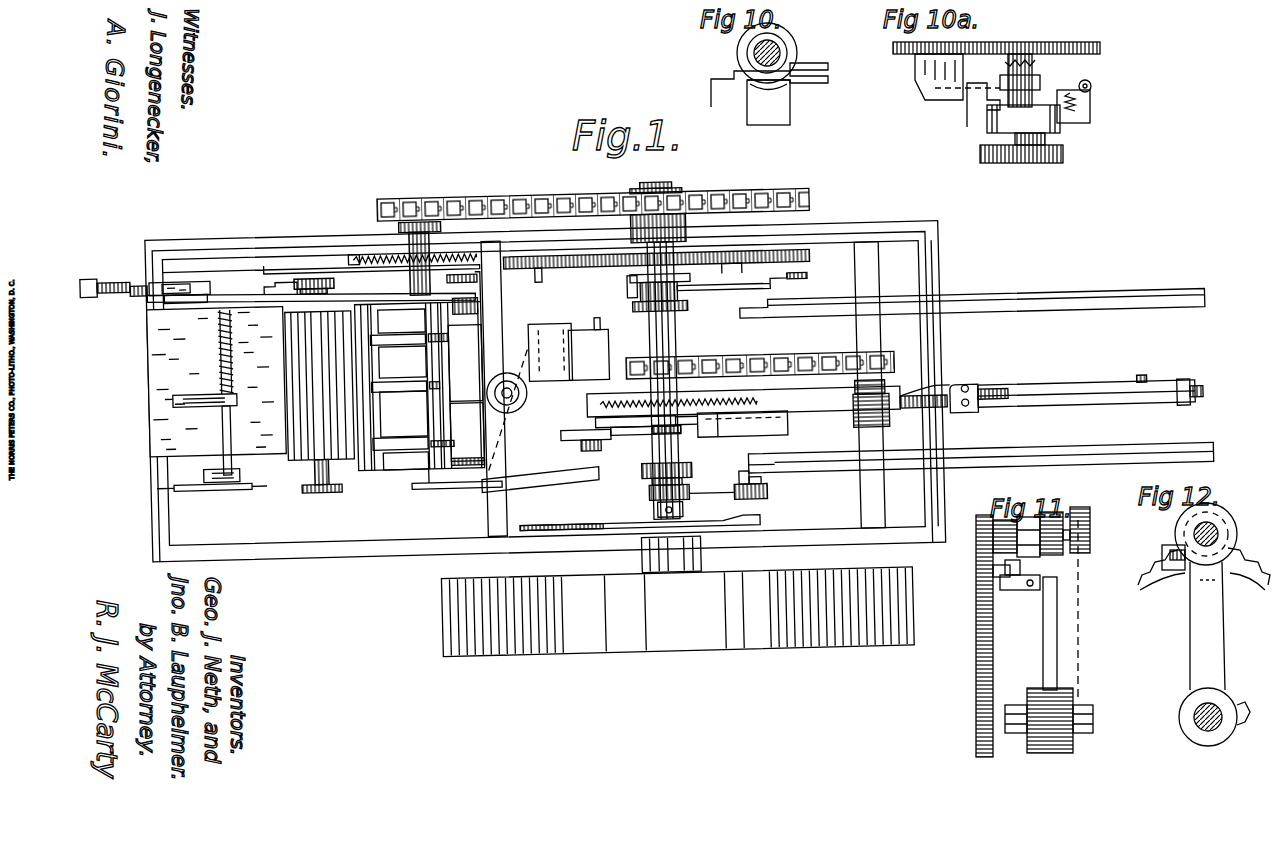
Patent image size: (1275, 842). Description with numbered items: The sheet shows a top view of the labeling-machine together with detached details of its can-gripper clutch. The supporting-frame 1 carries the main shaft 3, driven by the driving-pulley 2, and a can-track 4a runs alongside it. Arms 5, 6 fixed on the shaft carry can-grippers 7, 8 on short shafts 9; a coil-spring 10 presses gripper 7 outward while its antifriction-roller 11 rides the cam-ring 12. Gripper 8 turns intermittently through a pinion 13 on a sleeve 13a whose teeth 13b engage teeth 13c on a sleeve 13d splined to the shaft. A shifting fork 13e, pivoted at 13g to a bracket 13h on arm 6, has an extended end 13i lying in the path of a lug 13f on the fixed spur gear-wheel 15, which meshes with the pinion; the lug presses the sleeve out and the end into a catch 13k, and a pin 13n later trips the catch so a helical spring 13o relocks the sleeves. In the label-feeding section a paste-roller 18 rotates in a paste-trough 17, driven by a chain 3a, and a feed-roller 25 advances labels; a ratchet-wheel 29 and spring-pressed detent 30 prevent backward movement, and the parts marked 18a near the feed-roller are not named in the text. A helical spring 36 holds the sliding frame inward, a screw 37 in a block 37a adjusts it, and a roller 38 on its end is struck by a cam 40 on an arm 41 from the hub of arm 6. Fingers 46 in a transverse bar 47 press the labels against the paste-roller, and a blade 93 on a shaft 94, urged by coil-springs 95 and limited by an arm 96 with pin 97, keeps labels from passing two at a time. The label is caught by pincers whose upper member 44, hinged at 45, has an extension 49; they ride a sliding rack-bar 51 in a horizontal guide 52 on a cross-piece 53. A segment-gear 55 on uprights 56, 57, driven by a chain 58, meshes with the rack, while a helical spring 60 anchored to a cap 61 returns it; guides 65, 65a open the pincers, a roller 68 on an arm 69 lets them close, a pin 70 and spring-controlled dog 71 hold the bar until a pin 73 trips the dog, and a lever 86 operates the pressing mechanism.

In FIG. 1, the supporting-frame 1 is at (858, 236).
In FIG. 1, the driving-pulley 2 is at (677, 612).
In FIG. 1, the main shaft 3 is at (677, 330).
In FIG. 11, the main shaft 3 is at (1027, 705).
In FIG. 12, the main shaft 3 is at (1190, 716).
In FIG. 1, the chain 3a is at (576, 195).
In FIG. 1, the can-track 4a is at (993, 325).
In FIG. 1, the arm 5 is at (647, 495).
In FIG. 1, the arm 6 is at (690, 304).
In FIG. 10, the arm 6 is at (768, 102).
In FIG. 10A, the arm 6 is at (1023, 125).
In FIG. 11, the arm 6 is at (1043, 631).
In FIG. 12, the arm 6 is at (1207, 626).
In FIG. 1, the can-gripper 7 is at (690, 472).
In FIG. 1, the can-gripper 8 is at (635, 314).
In FIG. 10A, the can-gripper 8 is at (1021, 154).
In FIG. 11, the can-gripper 8 is at (1090, 545).
In FIG. 12, the can-gripper 8 is at (1176, 530).
In FIG. 1, the short shaft 9 is at (650, 484).
In FIG. 10, the short shaft 9 is at (740, 57).
In FIG. 11, the short shaft 9 is at (1052, 512).
In FIG. 12, the short shaft 9 is at (1215, 530).
In FIG. 1, the coil-spring 10 is at (655, 508).
In FIG. 1, the antifriction-roller 11 is at (680, 512).
In FIG. 1, the cam-ring 12 is at (528, 525).
In FIG. 10A, the pinion 13 is at (1030, 42).
In FIG. 11, the pinion 13 is at (976, 535).
In FIG. 1, the sleeve 13a is at (633, 281).
In FIG. 10A, the sleeve 13a is at (1042, 60).
In FIG. 10A, the teeth 13b is at (1002, 59).
In FIG. 11, the teeth 13b is at (993, 568).
In FIG. 10A, the teeth 13c is at (1040, 66).
In FIG. 11, the teeth 13c is at (1025, 517).
In FIG. 10, the sleeve 13d is at (783, 42).
In FIG. 10A, the sleeve 13d is at (1000, 74).
In FIG. 11, the sleeve 13d is at (993, 585).
In FIG. 10, the shifting fork 13e is at (795, 68).
In FIG. 10A, the shifting fork 13e is at (1091, 85).
In FIG. 1, the lug 13f is at (725, 273).
In FIG. 10A, the lug 13f is at (925, 79).
In FIG. 10, the pivot 13g is at (832, 84).
In FIG. 10A, the pivot 13g is at (1090, 95).
In FIG. 11, the pivot 13g is at (1003, 524).
In FIG. 1, the bracket 13h is at (710, 289).
In FIG. 10, the bracket 13h is at (808, 90).
In FIG. 10A, the bracket 13h is at (1080, 123).
In FIG. 10, the extended end of shifting fork 13i is at (713, 86).
In FIG. 10A, the extended end of shifting fork 13i is at (967, 102).
In FIG. 11, the extended end of shifting fork 13i is at (1015, 590).
In FIG. 12, the extended end of shifting fork 13i is at (1162, 552).
In FIG. 1, the catch 13k is at (630, 291).
In FIG. 10A, the catch 13k is at (970, 120).
In FIG. 11, the catch 13k is at (1040, 584).
In FIG. 12, the catch 13k is at (1182, 575).
In FIG. 1, the pin 13n is at (541, 282).
In FIG. 11, the pin 13n is at (1012, 595).
In FIG. 10A, the helical spring 13o is at (1068, 114).
In FIG. 1, the spur gear-wheel 15 is at (593, 268).
In FIG. 10A, the spur gear-wheel 15 is at (893, 47).
In FIG. 11, the spur gear-wheel 15 is at (976, 621).
In FIG. 12, the spur gear-wheel 15 is at (1204, 569).
In FIG. 1, the paste-trough 17 is at (217, 382).
In FIG. 1, the paste-roller 18 is at (482, 300).
In FIG. 1, the slide pins 18a is at (453, 387).
In FIG. 1, the feed-roller 25 is at (320, 402).
In FIG. 1, the ratchet-wheel 29 is at (337, 278).
In FIG. 1, the spring-pressed detent 30 is at (268, 281).
In FIG. 1, the helical spring 36 is at (375, 252).
In FIG. 1, the screw 37 is at (133, 280).
In FIG. 1, the block 37a is at (180, 273).
In FIG. 1, the roller 38 is at (475, 286).
In FIG. 1, the cam 40 is at (810, 282).
In FIG. 1, the arm 41 is at (748, 293).
In FIG. 1, the upper pincer member 44 is at (569, 387).
In FIG. 1, the hinge 45 is at (598, 319).
In FIG. 1, the upwardly-curved fingers 46 is at (396, 482).
In FIG. 1, the transverse bar 47 is at (427, 486).
In FIG. 1, the extension or arm 49 is at (642, 436).
In FIG. 1, the sliding rack-bar 51 is at (507, 388).
In FIG. 1, the horizontal guide 52 is at (742, 395).
In FIG. 1, the cross-piece 53 is at (872, 431).
In FIG. 1, the segment-gear 55 is at (862, 385).
In FIG. 1, the upright 56 is at (853, 390).
In FIG. 1, the upright 57 is at (885, 428).
In FIG. 1, the chain 58 is at (764, 360).
In FIG. 1, the helical spring 60 is at (618, 402).
In FIG. 1, the cap 61 is at (957, 392).
In FIG. 1, the guide 65 is at (595, 423).
In FIG. 1, the guide 65a is at (742, 424).
In FIG. 1, the roller 68 is at (736, 470).
In FIG. 1, the arm 69 is at (728, 487).
In FIG. 1, the pin 70 is at (1142, 390).
In FIG. 1, the spring-controlled dog 71 is at (978, 392).
In FIG. 1, the pin 73 is at (828, 415).
In FIG. 1, the lever 86 is at (566, 480).
In FIG. 1, the blade 93 is at (178, 382).
In FIG. 1, the shaft 94 is at (222, 419).
In FIG. 1, the coil-springs 95 is at (220, 338).
In FIG. 1, the arm 96 is at (221, 468).
In FIG. 1, the pin 97 is at (210, 482).